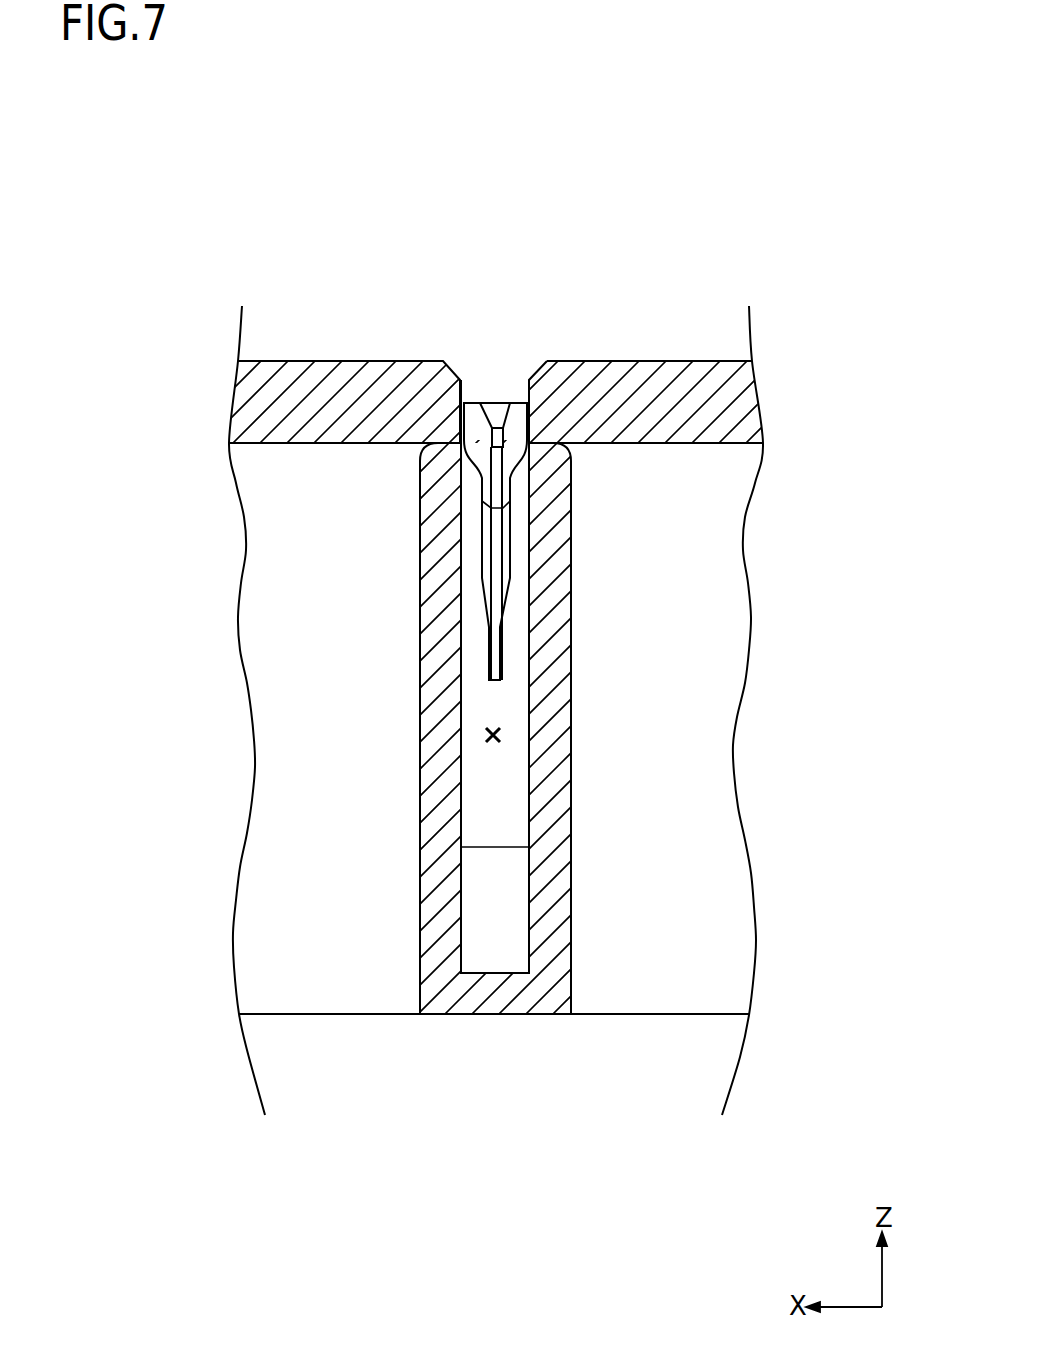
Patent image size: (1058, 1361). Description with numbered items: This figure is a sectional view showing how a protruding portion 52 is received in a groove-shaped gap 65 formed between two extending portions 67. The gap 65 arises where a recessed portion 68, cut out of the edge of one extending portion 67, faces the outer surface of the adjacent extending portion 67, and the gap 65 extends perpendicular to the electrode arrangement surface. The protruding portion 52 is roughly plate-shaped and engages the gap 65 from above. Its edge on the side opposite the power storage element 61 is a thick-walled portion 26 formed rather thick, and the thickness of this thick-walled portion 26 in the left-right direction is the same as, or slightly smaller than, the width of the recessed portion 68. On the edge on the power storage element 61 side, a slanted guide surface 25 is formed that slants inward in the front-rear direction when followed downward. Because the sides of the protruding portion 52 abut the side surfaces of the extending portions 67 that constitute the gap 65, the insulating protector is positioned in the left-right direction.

The power storage element 61 is at (708, 1060).
The gap 65 is at (500, 735).
The extending portion 67 is at (308, 390).
The recessed portion 68 is at (523, 398).
The protruding portion 52 is at (313, 541).
The thick-walled portion 26 is at (473, 422).
The slanted guide surface 25 is at (493, 472).